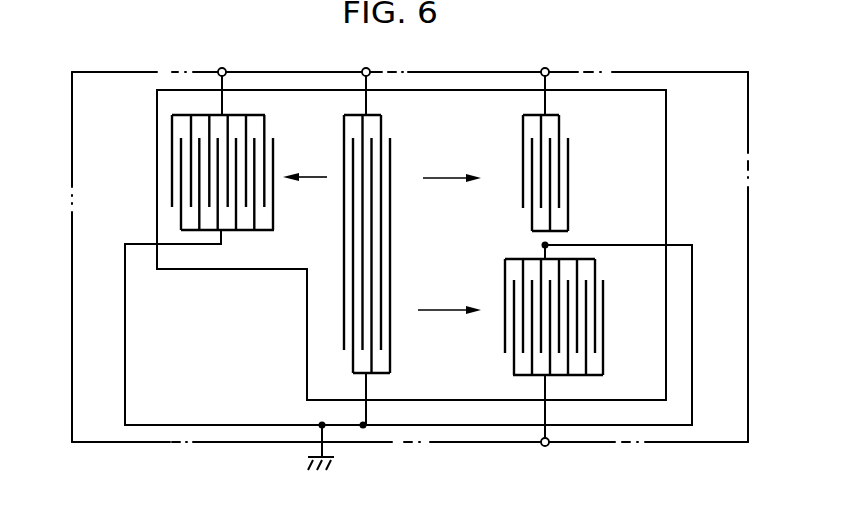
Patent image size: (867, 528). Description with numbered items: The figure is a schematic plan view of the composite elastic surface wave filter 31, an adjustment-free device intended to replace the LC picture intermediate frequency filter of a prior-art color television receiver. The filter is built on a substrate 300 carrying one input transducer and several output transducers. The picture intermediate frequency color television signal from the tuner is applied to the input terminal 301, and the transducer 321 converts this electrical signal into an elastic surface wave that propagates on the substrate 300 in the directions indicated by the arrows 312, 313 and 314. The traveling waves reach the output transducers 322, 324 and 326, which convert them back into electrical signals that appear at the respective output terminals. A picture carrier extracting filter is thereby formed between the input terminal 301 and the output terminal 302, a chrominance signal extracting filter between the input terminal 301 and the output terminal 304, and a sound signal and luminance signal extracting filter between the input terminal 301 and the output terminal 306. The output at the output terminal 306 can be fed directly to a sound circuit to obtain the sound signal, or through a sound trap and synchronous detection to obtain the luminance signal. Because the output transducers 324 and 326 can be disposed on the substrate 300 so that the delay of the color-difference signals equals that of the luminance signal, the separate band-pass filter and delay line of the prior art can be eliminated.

The composite elastic surface wave filter 31 is at (749, 193).
The substrate 300 is at (667, 168).
The input terminal 301 is at (369, 69).
The output terminal 302 is at (225, 69).
The output terminal 304 is at (548, 445).
The output terminal 306 is at (556, 55).
The arrow 312 is at (312, 178).
The arrow 313 is at (452, 179).
The arrow 314 is at (445, 311).
The transducer 321 is at (391, 147).
The transducer 322 is at (266, 125).
The output transducer 324 is at (605, 311).
The output transducer 326 is at (561, 128).